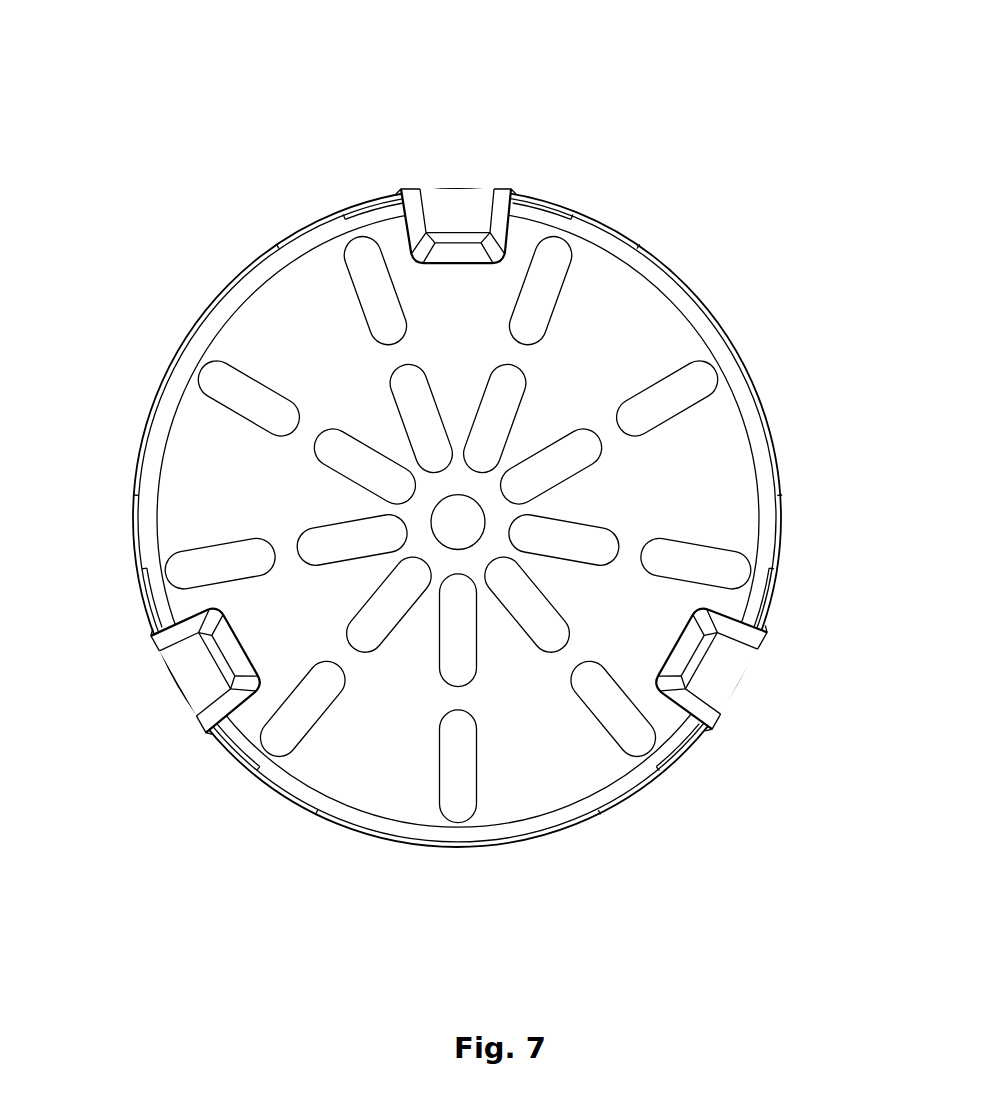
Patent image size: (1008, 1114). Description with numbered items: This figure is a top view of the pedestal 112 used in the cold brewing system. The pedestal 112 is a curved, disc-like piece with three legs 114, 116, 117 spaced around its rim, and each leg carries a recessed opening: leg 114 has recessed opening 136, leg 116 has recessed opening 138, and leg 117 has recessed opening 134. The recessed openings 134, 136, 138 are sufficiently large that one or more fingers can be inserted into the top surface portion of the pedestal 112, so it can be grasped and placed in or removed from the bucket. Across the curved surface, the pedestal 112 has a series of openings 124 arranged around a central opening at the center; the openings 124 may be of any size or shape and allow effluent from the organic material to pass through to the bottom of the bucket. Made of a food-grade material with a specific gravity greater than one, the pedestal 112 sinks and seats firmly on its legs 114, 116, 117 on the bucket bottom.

The pedestal 112 is at (557, 132).
The leg 114 is at (147, 690).
The leg 116 is at (421, 173).
The leg 117 is at (781, 672).
The openings 124 is at (533, 292).
The recessed opening 134 is at (722, 677).
The recessed opening 136 is at (199, 684).
The recessed opening 138 is at (457, 216).